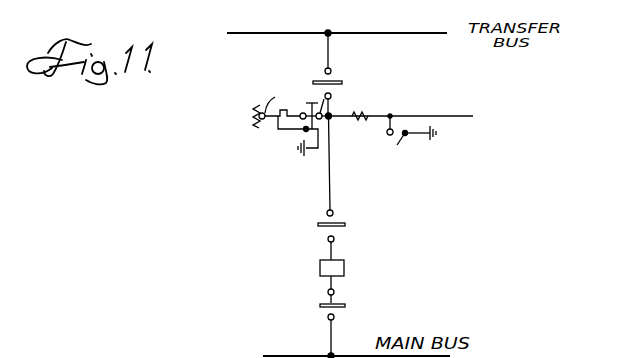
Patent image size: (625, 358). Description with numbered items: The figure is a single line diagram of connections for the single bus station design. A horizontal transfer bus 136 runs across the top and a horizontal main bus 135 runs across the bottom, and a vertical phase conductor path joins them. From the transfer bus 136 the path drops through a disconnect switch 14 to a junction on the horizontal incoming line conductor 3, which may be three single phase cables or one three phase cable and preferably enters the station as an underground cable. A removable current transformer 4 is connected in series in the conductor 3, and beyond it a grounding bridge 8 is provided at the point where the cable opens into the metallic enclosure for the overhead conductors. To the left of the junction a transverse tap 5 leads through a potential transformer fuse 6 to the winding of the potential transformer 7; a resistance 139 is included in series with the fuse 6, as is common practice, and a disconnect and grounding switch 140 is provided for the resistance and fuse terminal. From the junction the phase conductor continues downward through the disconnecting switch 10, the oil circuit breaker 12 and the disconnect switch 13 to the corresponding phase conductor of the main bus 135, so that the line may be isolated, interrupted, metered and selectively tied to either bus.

The transfer bus 136 is at (429, 32).
The disconnect switch 14 is at (340, 76).
The conductor 3 is at (457, 114).
The current transformer 4 is at (358, 107).
The grounding bridge 8 is at (411, 140).
The potential transformer 7 is at (246, 116).
The potential transformer fuse 6 is at (269, 99).
The transverse tap 5 is at (323, 98).
The resistance 139 is at (283, 132).
The disconnect and grounding switch 140 is at (299, 134).
The disconnecting switch 10 is at (349, 223).
The circuit breaker 12 is at (350, 271).
The disconnect switch 13 is at (351, 309).
The main bus 135 is at (264, 356).